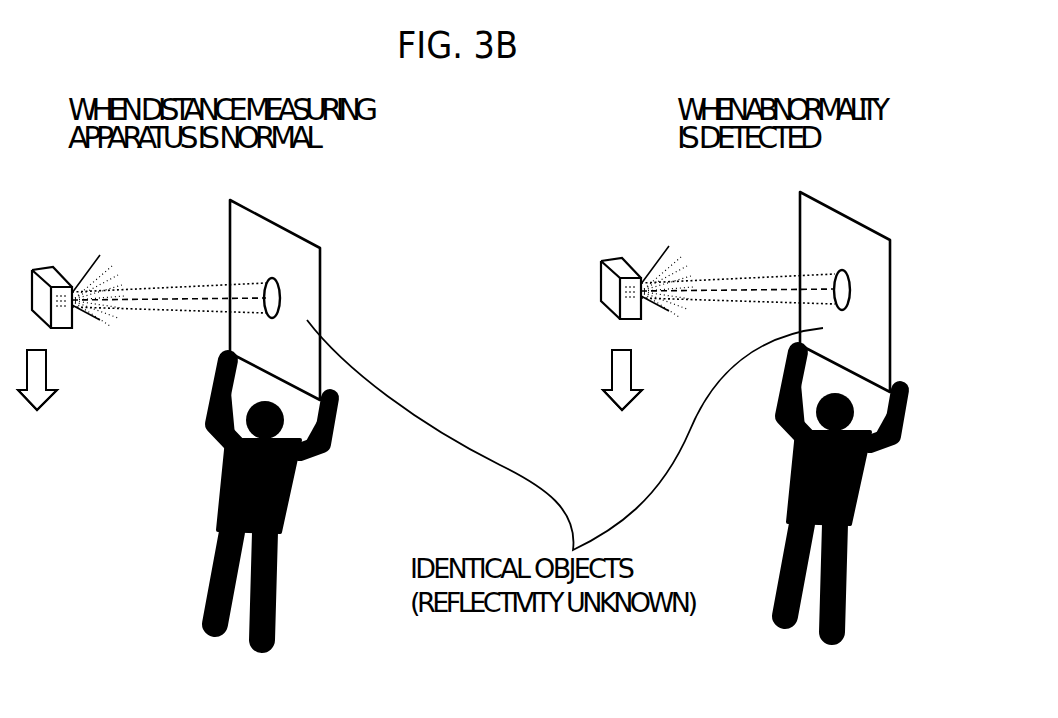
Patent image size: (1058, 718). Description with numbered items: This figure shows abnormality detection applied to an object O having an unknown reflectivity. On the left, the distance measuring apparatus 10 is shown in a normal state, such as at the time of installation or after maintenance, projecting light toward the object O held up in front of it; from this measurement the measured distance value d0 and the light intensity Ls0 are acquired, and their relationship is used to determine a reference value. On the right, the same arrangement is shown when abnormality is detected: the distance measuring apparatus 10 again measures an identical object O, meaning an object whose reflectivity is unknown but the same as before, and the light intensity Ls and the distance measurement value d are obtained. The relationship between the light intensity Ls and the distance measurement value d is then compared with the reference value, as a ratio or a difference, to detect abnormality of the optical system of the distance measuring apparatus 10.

The distance measuring apparatus 10 is at (53, 272).
The object O is at (557, 404).
The light intensity Ls0 is at (28, 405).
The measured distance value d0 is at (71, 405).
The light intensity Ls is at (610, 405).
The distance measurement value d is at (634, 406).